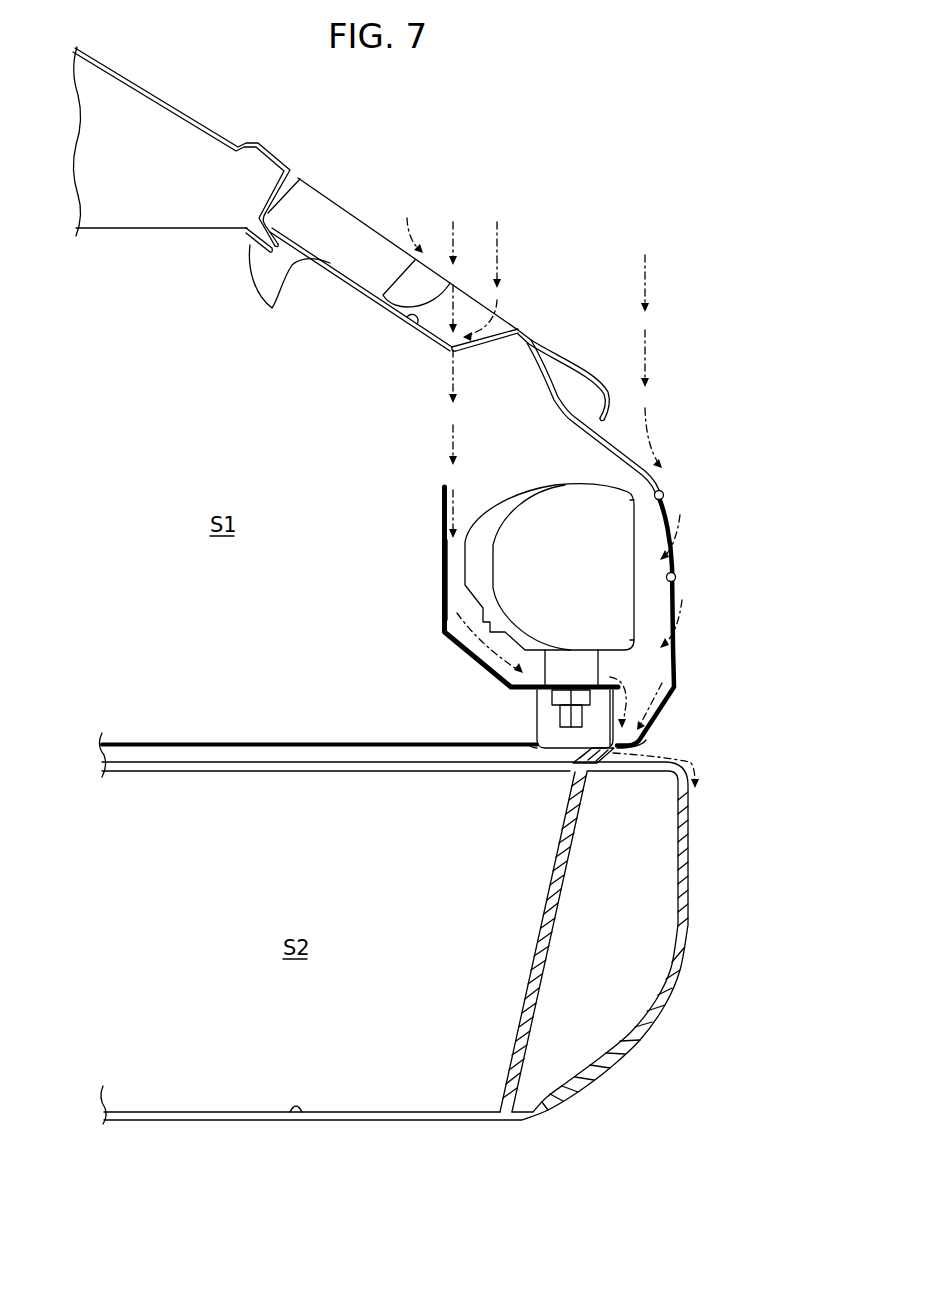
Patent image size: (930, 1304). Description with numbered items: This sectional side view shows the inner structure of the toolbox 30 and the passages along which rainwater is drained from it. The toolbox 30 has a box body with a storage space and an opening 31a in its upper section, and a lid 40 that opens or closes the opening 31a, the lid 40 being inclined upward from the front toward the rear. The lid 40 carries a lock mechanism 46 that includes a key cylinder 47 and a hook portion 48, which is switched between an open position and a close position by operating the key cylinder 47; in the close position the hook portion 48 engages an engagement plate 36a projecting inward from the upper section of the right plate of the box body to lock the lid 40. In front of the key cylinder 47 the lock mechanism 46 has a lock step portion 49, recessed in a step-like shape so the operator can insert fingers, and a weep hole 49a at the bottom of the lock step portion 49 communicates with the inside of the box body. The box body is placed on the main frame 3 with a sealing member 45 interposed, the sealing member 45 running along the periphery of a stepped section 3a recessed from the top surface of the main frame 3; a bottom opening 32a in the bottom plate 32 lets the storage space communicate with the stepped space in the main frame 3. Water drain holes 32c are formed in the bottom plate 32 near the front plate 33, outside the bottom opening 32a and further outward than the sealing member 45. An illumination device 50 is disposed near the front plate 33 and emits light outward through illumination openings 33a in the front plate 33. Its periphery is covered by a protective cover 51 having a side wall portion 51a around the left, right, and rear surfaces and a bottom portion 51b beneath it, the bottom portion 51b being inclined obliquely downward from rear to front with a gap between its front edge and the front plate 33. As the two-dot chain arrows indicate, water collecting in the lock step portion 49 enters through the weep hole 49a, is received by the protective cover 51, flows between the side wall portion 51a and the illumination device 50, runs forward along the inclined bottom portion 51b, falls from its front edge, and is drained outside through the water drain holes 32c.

The main frame 3 is at (417, 951).
The stepped section 3a is at (299, 1112).
The toolbox 30 is at (655, 544).
The opening 31a is at (530, 337).
The bottom plate 32 is at (548, 751).
The bottom opening 32a is at (522, 750).
The water drain hole 32c is at (641, 746).
The front plate 33 is at (679, 660).
The illumination opening 33a is at (664, 496).
The engagement plate 36a is at (252, 235).
The lid 40 is at (192, 118).
The sealing member 45 is at (612, 759).
The lock mechanism 46 is at (368, 213).
The key cylinder 47 is at (338, 204).
The hook portion 48 is at (263, 303).
The lock step portion 49 is at (413, 328).
The weep hole 49a is at (455, 348).
The illumination device 50 is at (563, 486).
The protective cover 51 is at (498, 588).
The side wall portion 51a is at (442, 600).
The bottom portion 51b is at (472, 655).